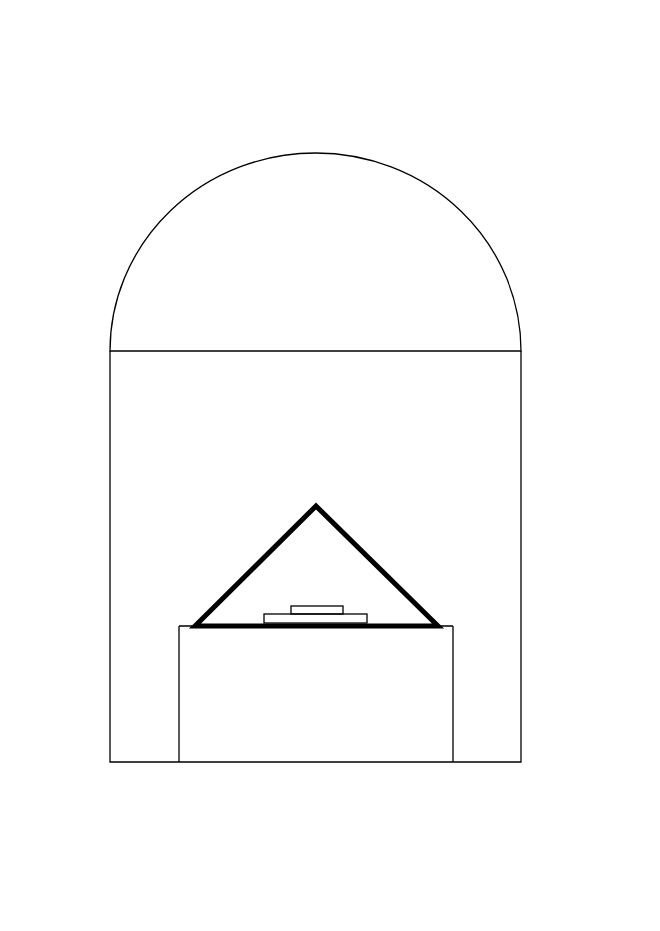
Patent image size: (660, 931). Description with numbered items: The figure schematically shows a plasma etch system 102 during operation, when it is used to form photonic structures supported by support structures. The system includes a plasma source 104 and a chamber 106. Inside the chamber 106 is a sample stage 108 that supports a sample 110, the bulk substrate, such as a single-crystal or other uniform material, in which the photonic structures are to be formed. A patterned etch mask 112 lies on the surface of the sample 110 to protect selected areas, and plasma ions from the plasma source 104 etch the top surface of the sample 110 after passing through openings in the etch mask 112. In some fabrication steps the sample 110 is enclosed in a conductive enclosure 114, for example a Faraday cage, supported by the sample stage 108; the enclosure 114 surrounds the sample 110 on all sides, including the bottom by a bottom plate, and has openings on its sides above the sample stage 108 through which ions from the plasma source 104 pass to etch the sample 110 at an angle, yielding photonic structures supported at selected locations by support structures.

The plasma etch system 102 is at (182, 117).
The plasma source 104 is at (315, 252).
The chamber 106 is at (521, 538).
The sample stage 108 is at (316, 694).
The sample 110 is at (356, 612).
The etch mask 112 is at (321, 604).
The conductive enclosure 114 is at (349, 532).